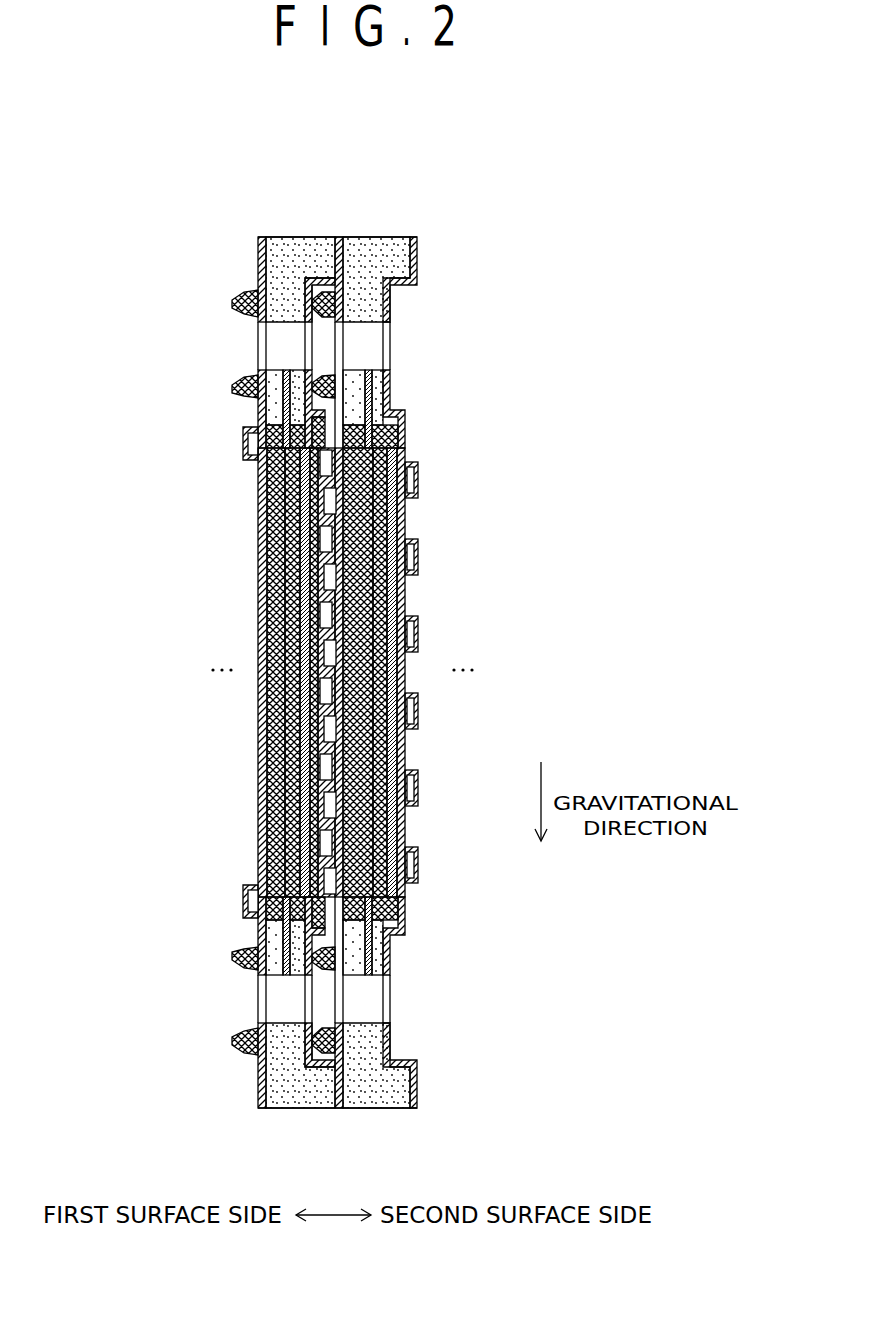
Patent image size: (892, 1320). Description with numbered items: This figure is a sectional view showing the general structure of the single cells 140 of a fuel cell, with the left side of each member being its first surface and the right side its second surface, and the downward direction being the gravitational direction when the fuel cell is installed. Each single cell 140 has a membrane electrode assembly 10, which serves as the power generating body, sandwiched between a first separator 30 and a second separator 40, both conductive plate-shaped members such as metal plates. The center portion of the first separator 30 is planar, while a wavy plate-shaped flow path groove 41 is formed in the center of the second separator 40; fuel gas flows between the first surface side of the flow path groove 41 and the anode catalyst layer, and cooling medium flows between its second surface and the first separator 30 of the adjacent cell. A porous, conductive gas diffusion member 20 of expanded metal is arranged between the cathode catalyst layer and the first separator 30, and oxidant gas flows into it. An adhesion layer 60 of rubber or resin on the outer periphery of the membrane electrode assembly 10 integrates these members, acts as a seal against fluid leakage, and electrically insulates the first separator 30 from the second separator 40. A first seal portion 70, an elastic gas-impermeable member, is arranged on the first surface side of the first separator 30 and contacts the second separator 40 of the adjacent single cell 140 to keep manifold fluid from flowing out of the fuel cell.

The single cell 140 is at (306, 160).
The first seal portion 70 is at (318, 298).
The first separator 30 is at (350, 262).
The second separator 40 is at (412, 246).
The gas diffusion member 20 is at (356, 432).
The membrane electrode assembly 10 is at (390, 368).
The flow path groove 41 is at (419, 480).
The adhesion layer 60 is at (377, 975).